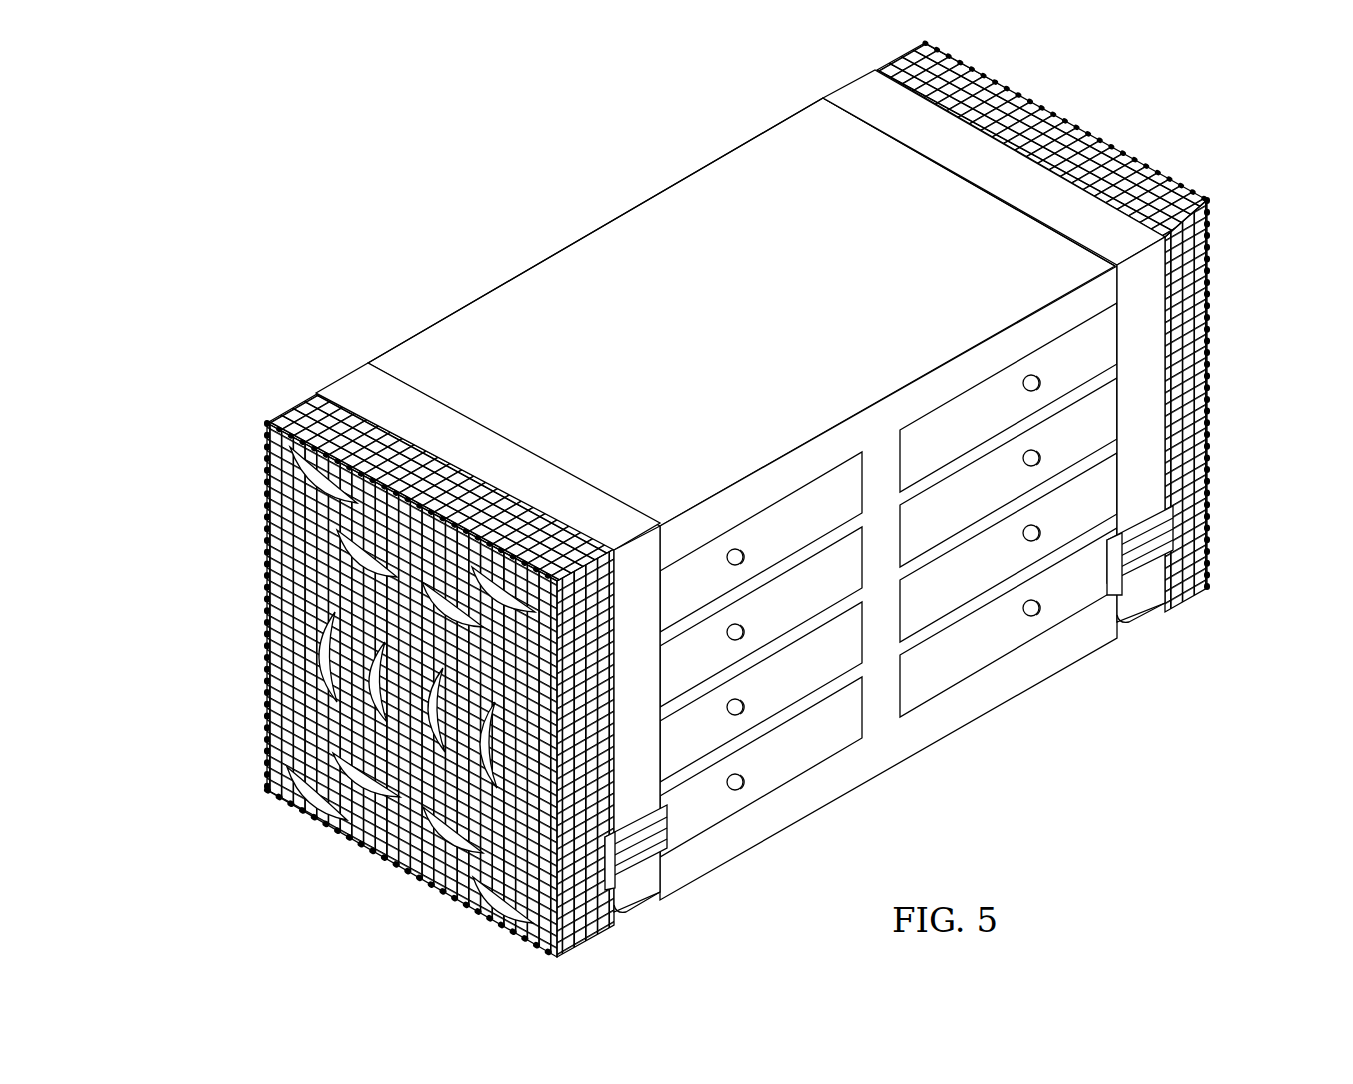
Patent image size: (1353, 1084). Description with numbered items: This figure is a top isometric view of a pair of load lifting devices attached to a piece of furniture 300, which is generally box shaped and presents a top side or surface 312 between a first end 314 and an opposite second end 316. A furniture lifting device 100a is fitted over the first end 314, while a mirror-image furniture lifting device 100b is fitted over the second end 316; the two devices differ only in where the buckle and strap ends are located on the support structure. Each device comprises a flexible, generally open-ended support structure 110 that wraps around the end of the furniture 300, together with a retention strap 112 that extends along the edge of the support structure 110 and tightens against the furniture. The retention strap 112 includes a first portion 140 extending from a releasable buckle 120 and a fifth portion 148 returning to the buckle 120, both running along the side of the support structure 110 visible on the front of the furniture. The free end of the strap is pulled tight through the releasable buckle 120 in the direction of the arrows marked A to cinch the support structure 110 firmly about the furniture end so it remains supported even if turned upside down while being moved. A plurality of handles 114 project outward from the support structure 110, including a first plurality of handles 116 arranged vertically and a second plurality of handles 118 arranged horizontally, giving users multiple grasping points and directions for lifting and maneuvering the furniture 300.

The furniture lifting device 100a is at (363, 675).
The furniture lifting device 100b is at (1045, 78).
The support structure 110 is at (660, 500).
The retention strap 112 is at (350, 385).
The handles 114 is at (235, 608).
The first plurality of handles 116 is at (266, 694).
The second plurality of handles 118 is at (260, 460).
The releasable buckle 120 is at (657, 827).
The first portion of the retention strap 140 is at (643, 747).
The fifth portion of the retention strap 148 is at (652, 912).
The piece of furniture 300 is at (728, 481).
The top side or surface 312 is at (590, 262).
The first end of the piece of furniture 314 is at (419, 323).
The second end of the piece of furniture 316 is at (803, 98).